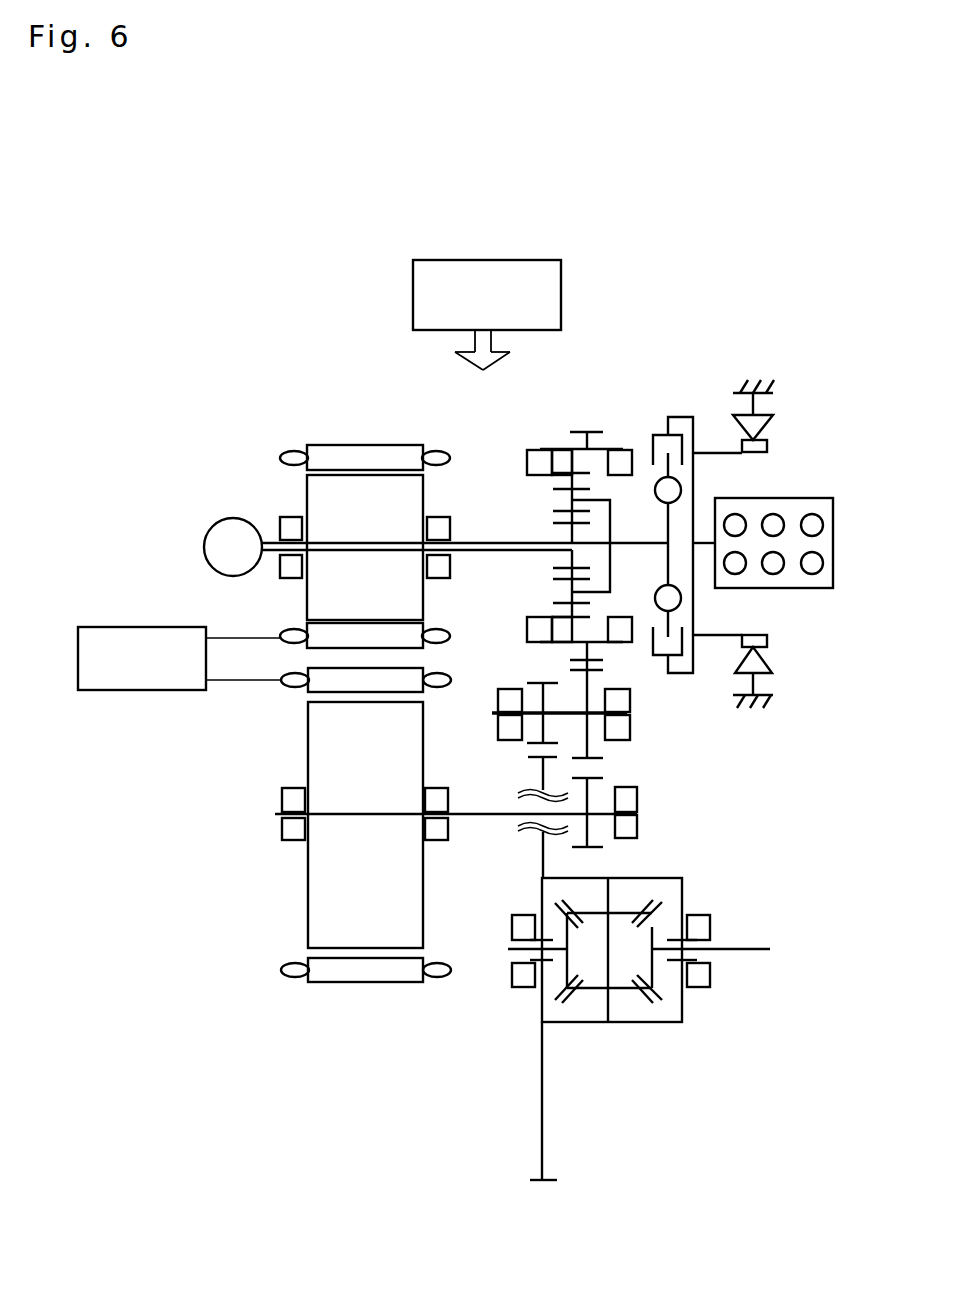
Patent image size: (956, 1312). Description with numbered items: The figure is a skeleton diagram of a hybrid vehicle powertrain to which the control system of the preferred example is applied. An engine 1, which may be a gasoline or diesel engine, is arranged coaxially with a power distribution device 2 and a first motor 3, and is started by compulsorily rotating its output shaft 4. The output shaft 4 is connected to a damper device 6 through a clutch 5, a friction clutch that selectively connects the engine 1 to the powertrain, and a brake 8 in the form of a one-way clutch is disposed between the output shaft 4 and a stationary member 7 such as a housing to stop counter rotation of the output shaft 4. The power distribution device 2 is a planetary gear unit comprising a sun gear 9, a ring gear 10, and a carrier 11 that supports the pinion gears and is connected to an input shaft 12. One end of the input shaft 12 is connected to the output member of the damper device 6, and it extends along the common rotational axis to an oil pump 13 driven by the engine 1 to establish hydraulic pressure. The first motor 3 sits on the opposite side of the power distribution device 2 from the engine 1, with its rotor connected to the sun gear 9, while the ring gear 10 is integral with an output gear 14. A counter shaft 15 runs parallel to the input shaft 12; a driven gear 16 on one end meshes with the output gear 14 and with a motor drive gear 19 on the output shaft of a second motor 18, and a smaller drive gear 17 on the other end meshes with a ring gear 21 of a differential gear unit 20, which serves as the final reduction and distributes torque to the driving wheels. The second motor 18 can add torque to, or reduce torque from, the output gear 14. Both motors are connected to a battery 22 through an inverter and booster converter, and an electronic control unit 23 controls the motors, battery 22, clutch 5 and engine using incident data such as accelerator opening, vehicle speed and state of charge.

The engine 1 is at (813, 498).
The power distribution device 2 is at (523, 426).
The first motor 3 is at (367, 444).
The output shaft 4 is at (705, 540).
The clutch 5 is at (662, 435).
The damper device 6 is at (657, 494).
The stationary member 7 is at (770, 388).
The brake 8 is at (770, 424).
The sun gear 9 is at (556, 525).
The ring gear 10 is at (558, 474).
The carrier 11 is at (612, 574).
The input shaft 12 is at (531, 552).
The oil pump 13 is at (235, 518).
The output gear 14 is at (590, 431).
The counter shaft 15 is at (628, 714).
The driven gear 16 is at (604, 753).
The drive gear 17 is at (537, 681).
The second motor 18 is at (383, 983).
The motor drive gear 19 is at (604, 774).
The differential gear unit 20 is at (662, 1023).
The ring gear 21 is at (541, 1072).
The battery 22 is at (142, 691).
The electronic control unit 23 is at (563, 297).